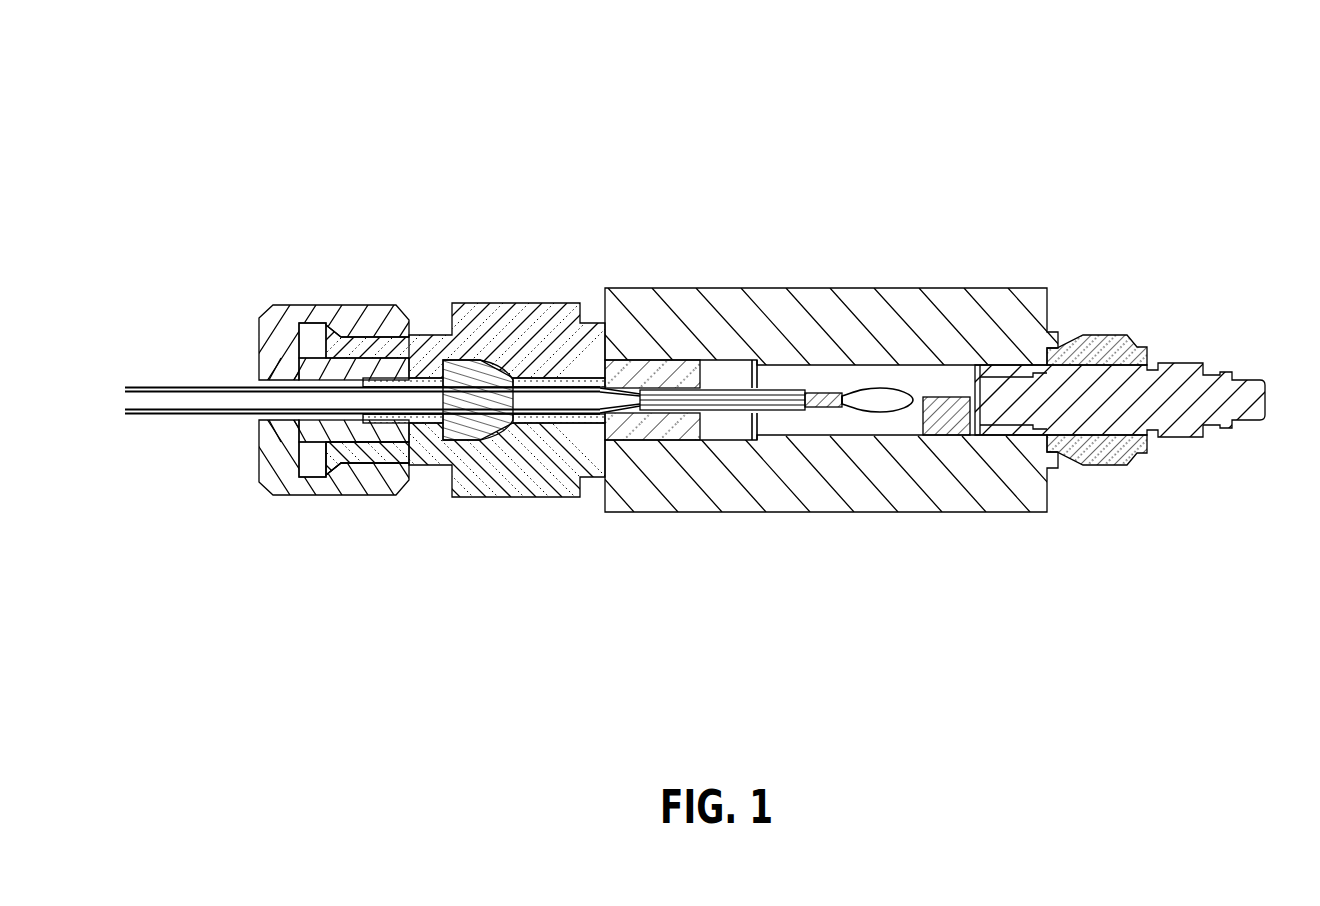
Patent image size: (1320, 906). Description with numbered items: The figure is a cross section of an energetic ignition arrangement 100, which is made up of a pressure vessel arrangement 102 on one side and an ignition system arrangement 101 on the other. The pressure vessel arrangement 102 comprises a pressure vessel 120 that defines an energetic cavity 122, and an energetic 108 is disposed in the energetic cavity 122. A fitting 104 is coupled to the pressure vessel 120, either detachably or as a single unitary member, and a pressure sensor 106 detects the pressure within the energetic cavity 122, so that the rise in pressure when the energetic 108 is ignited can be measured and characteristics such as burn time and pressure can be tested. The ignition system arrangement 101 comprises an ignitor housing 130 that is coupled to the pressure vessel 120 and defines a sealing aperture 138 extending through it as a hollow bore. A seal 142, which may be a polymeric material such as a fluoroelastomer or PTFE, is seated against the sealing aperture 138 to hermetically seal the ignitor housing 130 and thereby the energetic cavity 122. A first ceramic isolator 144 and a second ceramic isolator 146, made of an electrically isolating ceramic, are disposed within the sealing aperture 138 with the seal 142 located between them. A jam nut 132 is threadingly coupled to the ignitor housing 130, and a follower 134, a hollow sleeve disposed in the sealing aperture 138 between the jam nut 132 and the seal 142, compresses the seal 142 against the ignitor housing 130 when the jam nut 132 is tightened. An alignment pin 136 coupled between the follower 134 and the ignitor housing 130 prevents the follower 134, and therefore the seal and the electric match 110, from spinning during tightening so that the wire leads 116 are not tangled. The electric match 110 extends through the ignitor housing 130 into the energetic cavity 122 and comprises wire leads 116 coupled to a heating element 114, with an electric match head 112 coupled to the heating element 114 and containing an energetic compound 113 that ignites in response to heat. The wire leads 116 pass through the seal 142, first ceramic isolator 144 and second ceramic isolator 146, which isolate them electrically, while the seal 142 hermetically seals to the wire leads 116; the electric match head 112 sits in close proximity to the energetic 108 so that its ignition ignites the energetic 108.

The energetic ignition arrangement 100 is at (744, 93).
The ignition system arrangement 101 is at (446, 180).
The pressure vessel arrangement 102 is at (1019, 195).
The fitting 104 is at (1100, 335).
The pressure sensor 106 is at (1187, 363).
The energetic 108 is at (942, 426).
The electric match 110 is at (803, 431).
The electric match head 112 is at (888, 402).
The energetic compound 113 is at (900, 416).
The heating element 114 is at (848, 410).
The wire leads 116 is at (183, 350).
The pressure vessel 120 is at (797, 288).
The energetic cavity 122 is at (925, 385).
The ignitor housing 130 is at (517, 303).
The jam nut 132 is at (330, 305).
The follower 134 is at (298, 466).
The alignment pin 136 is at (357, 448).
The sealing aperture 138 is at (505, 378).
The seal 142 is at (476, 426).
The first ceramic isolator 144 is at (566, 400).
The second ceramic isolator 146 is at (408, 442).